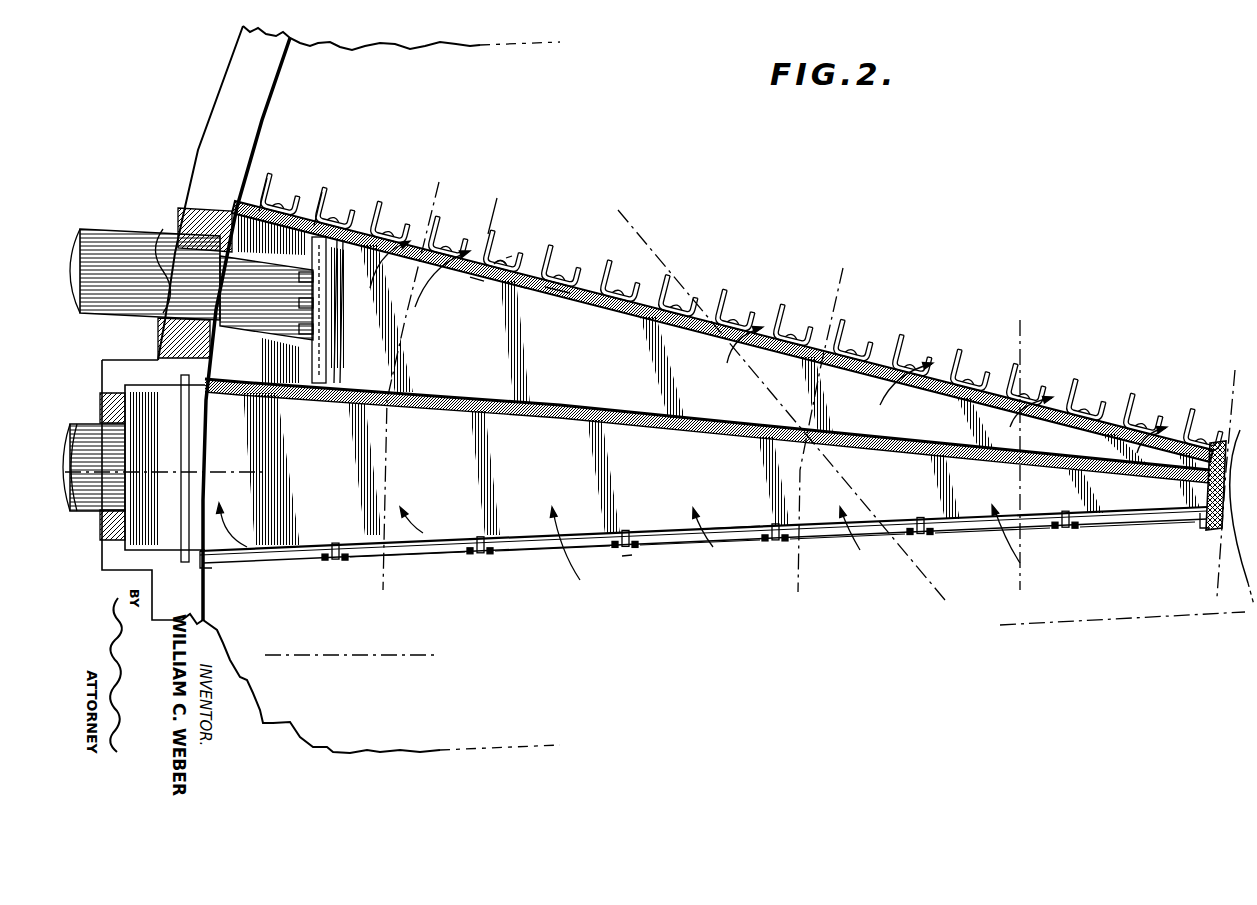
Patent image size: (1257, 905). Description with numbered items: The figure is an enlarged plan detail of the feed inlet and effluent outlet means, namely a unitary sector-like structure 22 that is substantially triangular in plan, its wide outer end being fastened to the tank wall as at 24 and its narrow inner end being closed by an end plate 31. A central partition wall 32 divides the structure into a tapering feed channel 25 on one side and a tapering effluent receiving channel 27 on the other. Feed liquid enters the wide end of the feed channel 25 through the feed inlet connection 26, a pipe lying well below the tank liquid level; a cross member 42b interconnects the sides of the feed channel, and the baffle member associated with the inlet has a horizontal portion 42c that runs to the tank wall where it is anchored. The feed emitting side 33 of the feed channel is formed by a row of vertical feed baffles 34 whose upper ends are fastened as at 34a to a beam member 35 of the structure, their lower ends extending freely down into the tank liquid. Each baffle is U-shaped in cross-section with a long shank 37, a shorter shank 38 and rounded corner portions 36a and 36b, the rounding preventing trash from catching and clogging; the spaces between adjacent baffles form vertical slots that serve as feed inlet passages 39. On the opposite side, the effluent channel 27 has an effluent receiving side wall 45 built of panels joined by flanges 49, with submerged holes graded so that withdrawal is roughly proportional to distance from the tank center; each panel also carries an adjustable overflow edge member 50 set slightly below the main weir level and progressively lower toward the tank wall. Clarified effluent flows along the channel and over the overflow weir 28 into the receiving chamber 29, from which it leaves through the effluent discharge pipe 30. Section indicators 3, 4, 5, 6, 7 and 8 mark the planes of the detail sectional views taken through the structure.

The section line 3- 3 is at (140, 486).
The section line 4- 4 is at (437, 186).
The section line 5- 5 is at (843, 277).
The section line 6- 6 is at (1237, 370).
The section line 7- 7 is at (621, 214).
The section line 8- 8 is at (1020, 328).
The unitary sector-like structure 22 is at (627, 560).
The tank wall fastening 24 is at (203, 566).
The feed channel 25 is at (779, 354).
The feed inlet connection 26 is at (183, 288).
The effluent receiving channel 27 is at (709, 486).
The overflow weir 28 is at (190, 434).
The receiving chamber 29 is at (165, 467).
The effluent discharge pipe 30 is at (83, 513).
The end plate 31 is at (1203, 497).
The central partition wall 32 is at (705, 434).
The feed emitting side 33 is at (535, 251).
The feed baffles 34 is at (438, 216).
The baffle upper end fastening 34a is at (556, 268).
The beam member 35 is at (590, 304).
The rounded corner portion 36a is at (477, 277).
The rounded corner portion 36b is at (519, 286).
The long shank 37 is at (488, 232).
The shorter shank 38 is at (507, 253).
The feed inlet passages 39 is at (365, 200).
The cross member 42b is at (323, 371).
The horizontal baffle portion 42c is at (280, 268).
The effluent receiving side wall 45 is at (723, 529).
The flanges 49 is at (343, 560).
The adjustable overflow edge member 50 is at (538, 551).